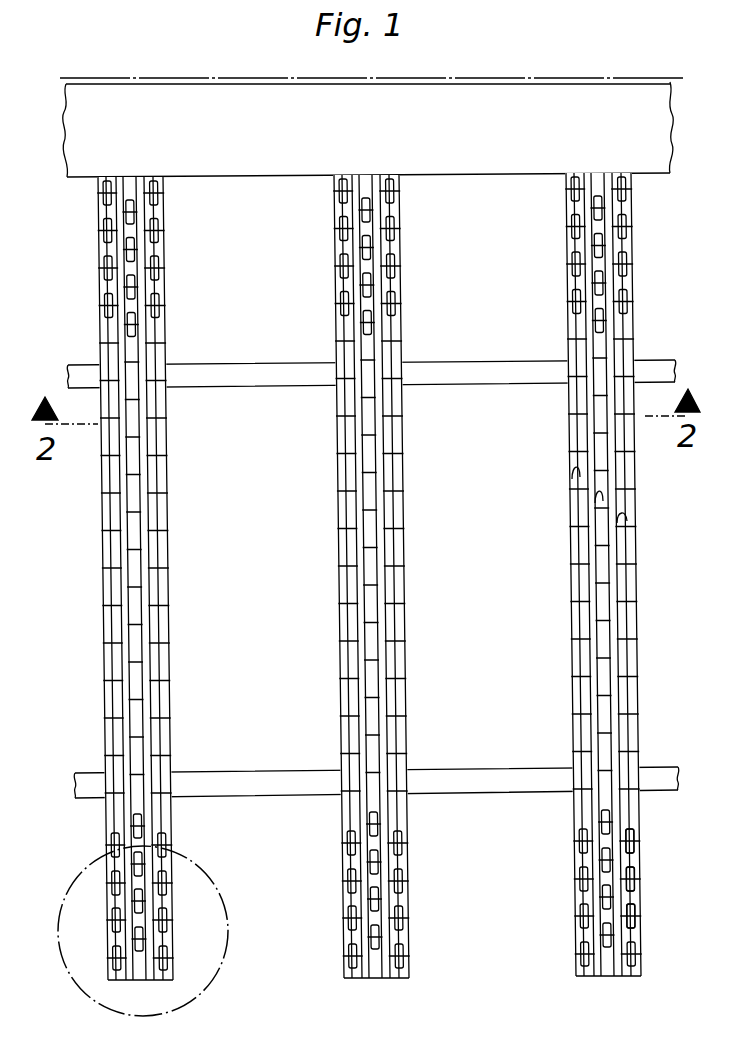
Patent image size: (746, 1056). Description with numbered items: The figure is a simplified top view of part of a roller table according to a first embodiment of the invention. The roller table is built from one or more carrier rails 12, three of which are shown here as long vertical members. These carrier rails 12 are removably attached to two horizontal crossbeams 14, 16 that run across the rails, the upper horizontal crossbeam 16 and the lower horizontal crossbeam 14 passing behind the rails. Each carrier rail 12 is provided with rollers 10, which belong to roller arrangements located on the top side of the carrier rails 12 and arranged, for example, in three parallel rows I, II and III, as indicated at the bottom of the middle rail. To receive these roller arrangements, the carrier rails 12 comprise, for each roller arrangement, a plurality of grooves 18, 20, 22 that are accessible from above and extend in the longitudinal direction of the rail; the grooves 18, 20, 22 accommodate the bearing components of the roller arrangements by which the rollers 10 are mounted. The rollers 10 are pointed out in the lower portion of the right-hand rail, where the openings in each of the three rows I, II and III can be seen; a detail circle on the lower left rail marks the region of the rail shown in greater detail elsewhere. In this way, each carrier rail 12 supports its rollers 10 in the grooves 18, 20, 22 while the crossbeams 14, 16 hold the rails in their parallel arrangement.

The rollers 10 is at (633, 848).
The carrier rails 12 is at (172, 634).
The horizontal crossbeam 14 is at (660, 770).
The horizontal crossbeam 16 is at (650, 372).
The groove 18 is at (573, 476).
The groove 20 is at (596, 500).
The groove 22 is at (620, 520).
The parallel row I is at (355, 981).
The parallel row II is at (378, 981).
The parallel row III is at (400, 981).